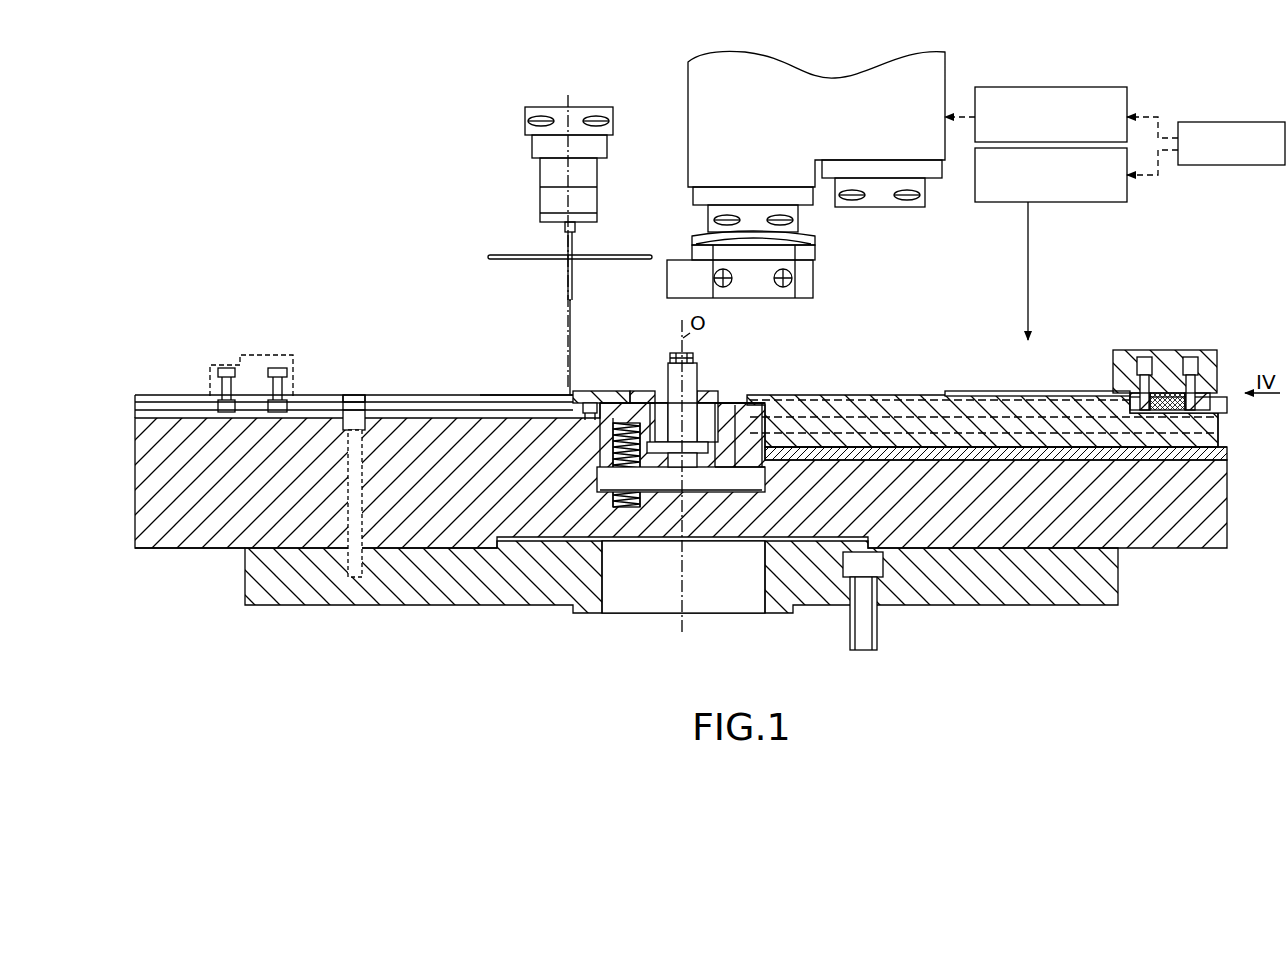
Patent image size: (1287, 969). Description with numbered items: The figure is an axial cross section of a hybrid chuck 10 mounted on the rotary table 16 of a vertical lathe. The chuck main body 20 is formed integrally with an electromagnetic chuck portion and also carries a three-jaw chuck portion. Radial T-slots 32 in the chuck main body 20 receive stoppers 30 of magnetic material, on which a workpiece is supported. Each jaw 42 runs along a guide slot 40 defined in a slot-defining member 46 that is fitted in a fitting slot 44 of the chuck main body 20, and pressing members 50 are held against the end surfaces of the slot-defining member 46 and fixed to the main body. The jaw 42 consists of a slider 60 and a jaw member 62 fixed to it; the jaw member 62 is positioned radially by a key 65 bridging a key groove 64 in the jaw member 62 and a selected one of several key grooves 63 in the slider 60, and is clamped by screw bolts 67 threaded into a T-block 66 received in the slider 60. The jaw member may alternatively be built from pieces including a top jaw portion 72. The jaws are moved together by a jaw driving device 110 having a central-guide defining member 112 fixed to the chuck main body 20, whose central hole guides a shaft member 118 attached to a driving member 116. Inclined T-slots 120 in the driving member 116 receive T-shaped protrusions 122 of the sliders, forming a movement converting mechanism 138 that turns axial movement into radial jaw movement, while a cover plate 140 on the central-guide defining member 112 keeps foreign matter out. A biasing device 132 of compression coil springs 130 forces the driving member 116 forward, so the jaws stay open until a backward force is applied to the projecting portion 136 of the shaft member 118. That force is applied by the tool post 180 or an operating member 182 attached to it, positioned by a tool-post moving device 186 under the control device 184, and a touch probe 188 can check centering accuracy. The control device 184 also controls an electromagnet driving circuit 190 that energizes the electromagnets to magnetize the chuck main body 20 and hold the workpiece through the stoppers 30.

The hybrid chuck 10 is at (965, 343).
The rotary table 16 is at (1110, 585).
The chuck main body 20 is at (1215, 517).
The stopper 30 is at (253, 363).
The T-slot 32 is at (170, 396).
The guide slot 40 is at (1228, 427).
The jaw 42 is at (1161, 353).
The fitting slot 44 is at (1022, 457).
The slot-defining member 46 is at (1222, 452).
The pressing member 50 is at (1222, 407).
The slider 60 is at (885, 398).
The jaw member 62 is at (1122, 355).
The key groove 63 is at (1052, 392).
The key groove 64 is at (1160, 393).
The key 65 is at (1208, 390).
The T-block 66 is at (1125, 400).
The screw bolt 67 is at (1145, 363).
The top jaw portion 72 is at (527, 400).
The jaw driving device 110 is at (718, 372).
The central-guide defining member 112 is at (625, 390).
The driving member 116 is at (600, 430).
The shaft member 118 is at (705, 400).
The T-slot 120 is at (742, 405).
The T-shaped protrusion 122 is at (735, 470).
The compression coil spring 130 is at (600, 440).
The biasing device 132 is at (628, 510).
The projecting portion 136 is at (665, 360).
The movement converting mechanism 138 is at (770, 465).
The cover plate 140 is at (567, 347).
The tool post 180 is at (795, 267).
The operating member 182 is at (703, 290).
The control device 184 is at (1232, 122).
The tool-post moving device 186 is at (1082, 87).
The touch probe 188 is at (547, 197).
The electromagnet driving circuit 190 is at (1085, 203).